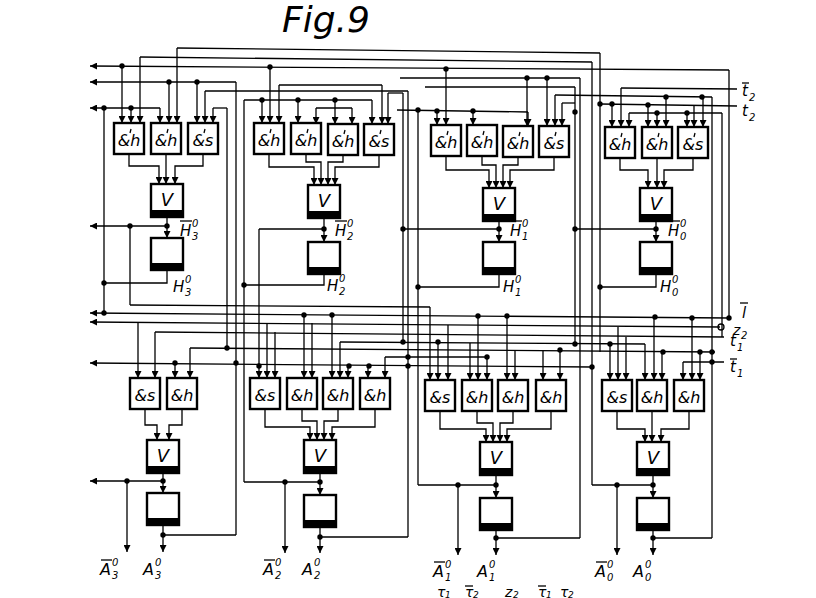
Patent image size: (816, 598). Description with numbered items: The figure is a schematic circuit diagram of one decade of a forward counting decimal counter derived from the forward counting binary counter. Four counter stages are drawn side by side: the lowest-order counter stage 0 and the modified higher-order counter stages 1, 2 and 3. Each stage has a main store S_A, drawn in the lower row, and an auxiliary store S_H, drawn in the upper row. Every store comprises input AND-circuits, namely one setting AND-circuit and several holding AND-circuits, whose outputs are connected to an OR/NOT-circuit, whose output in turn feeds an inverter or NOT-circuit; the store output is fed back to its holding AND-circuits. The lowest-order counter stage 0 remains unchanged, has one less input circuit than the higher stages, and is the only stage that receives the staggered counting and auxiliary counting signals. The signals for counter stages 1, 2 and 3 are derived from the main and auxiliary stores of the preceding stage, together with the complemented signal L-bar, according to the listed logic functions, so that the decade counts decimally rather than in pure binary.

The highest-order counter stage 3 is at (220, 484).
The third counter stage 2 is at (382, 486).
The second counter stage 1 is at (562, 491).
The lowest-order counter stage 0 is at (708, 491).